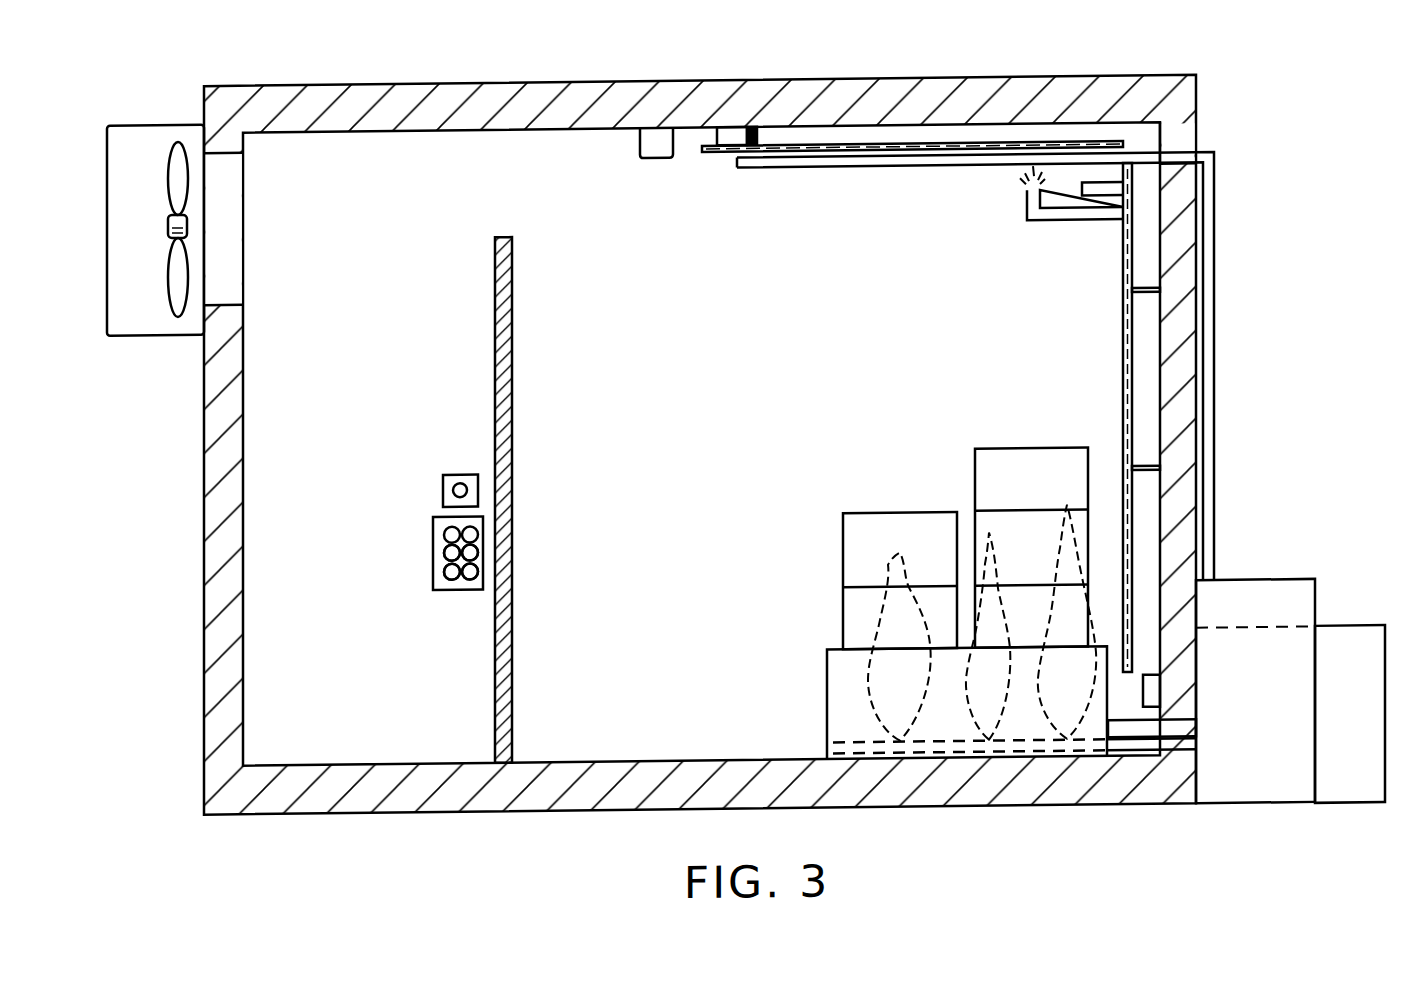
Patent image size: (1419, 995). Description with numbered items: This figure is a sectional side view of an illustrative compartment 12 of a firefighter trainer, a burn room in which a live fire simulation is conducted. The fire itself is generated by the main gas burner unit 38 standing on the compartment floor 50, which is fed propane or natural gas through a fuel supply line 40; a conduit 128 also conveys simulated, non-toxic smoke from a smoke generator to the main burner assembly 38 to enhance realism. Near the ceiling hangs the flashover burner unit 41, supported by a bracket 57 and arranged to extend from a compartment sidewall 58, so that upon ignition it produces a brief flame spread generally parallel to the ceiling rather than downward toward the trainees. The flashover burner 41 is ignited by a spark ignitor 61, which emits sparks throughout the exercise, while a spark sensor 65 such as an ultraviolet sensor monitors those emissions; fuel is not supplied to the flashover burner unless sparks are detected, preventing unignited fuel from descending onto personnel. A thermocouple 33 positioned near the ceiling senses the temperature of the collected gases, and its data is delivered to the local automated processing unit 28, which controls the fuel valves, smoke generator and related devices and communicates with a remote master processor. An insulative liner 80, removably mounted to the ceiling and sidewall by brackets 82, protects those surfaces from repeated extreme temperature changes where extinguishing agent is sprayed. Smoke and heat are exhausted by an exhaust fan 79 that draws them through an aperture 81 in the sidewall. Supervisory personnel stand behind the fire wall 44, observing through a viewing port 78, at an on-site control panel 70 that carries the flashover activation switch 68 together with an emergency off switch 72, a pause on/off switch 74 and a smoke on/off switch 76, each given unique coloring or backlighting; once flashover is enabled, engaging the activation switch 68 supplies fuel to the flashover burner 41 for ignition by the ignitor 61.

The compartment 12 is at (1230, 162).
The local automated processing unit 28 is at (1335, 618).
The thermocouple 33 is at (652, 148).
The main gas burner unit 38 is at (845, 755).
The fuel supply line 40 is at (1123, 755).
The flashover burner unit 41 is at (845, 175).
The fire wall 44 is at (495, 434).
The compartment floor 50 is at (650, 804).
The bracket 57 is at (978, 163).
The compartment sidewall 58 is at (1185, 409).
The spark ignitor 61 is at (1027, 217).
The spark sensor 65 is at (1120, 201).
The activation switch 68 is at (453, 542).
The control panel 70 is at (362, 531).
The emergency off switch 72 is at (458, 495).
The pause on/off switch 74 is at (455, 565).
The smoke on/off switch 76 is at (460, 592).
The viewing port 78 is at (495, 321).
The exhaust fan 79 is at (155, 196).
The insulative liner 80 is at (727, 151).
The aperture 81 is at (230, 228).
The bracket 82 is at (757, 149).
The conduit 128 is at (1180, 756).